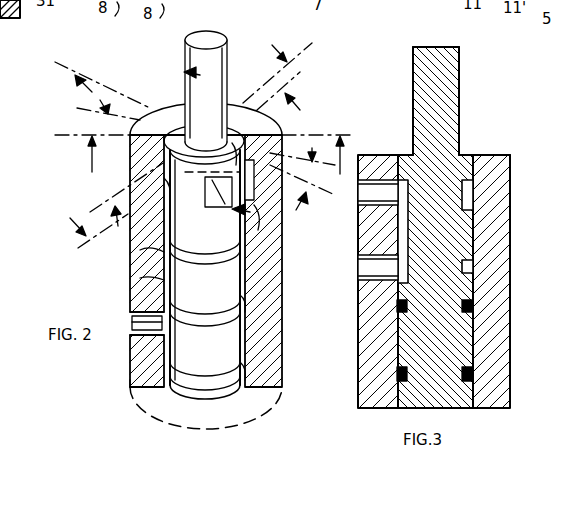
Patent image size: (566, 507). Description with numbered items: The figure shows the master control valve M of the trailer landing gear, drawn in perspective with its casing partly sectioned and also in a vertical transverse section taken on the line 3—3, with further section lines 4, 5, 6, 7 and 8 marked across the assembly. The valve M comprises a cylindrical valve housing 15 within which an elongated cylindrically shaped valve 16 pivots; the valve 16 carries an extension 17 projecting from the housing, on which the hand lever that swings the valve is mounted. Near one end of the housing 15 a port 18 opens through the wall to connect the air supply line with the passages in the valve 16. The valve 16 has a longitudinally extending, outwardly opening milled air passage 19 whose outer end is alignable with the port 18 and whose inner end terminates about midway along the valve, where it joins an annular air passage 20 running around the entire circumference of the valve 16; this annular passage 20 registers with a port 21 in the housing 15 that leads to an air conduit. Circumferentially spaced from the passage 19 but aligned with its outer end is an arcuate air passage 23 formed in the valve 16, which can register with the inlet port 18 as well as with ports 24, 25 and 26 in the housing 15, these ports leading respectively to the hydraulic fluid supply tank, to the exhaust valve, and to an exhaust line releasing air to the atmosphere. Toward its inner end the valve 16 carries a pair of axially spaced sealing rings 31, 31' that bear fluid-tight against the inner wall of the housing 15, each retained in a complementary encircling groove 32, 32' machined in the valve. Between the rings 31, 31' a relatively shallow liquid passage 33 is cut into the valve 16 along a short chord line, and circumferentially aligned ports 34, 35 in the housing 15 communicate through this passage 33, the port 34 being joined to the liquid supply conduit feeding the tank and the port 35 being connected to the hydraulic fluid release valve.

In FIG. 2, the valve housing 15 is at (172, 110).
In FIG. 3, the valve housing 15 is at (497, 226).
In FIG. 2, the valve 16 is at (227, 330).
In FIG. 3, the valve 16 is at (463, 156).
In FIG. 2, the extension 17 is at (215, 34).
In FIG. 3, the extension 17 is at (448, 83).
In FIG. 2, the port 18 is at (134, 248).
In FIG. 3, the port 18 is at (378, 192).
In FIG. 2, the milled air passage 19 is at (164, 180).
In FIG. 3, the milled air passage 19 is at (403, 222).
In FIG. 2, the annular air passage 20 is at (240, 248).
In FIG. 3, the annular air passage 20 is at (468, 268).
In FIG. 2, the port 21 is at (140, 279).
In FIG. 3, the port 21 is at (374, 268).
In FIG. 2, the arcuate air passage 23 is at (243, 162).
In FIG. 3, the arcuate air passage 23 is at (468, 192).
In FIG. 2, the port 24 is at (222, 222).
In FIG. 2, the port 25 is at (278, 212).
In FIG. 2, the port 26 is at (238, 138).
In FIG. 2, the sealing ring 31 is at (239, 313).
In FIG. 3, the sealing ring 31 is at (505, 301).
In FIG. 2, the sealing ring 31' is at (186, 400).
In FIG. 3, the sealing ring 31' is at (505, 376).
In FIG. 2, the encircling groove 32 is at (293, 306).
In FIG. 3, the encircling groove 32 is at (364, 308).
In FIG. 2, the encircling groove 32' is at (293, 373).
In FIG. 3, the encircling groove 32' is at (362, 375).
In FIG. 2, the liquid passage 33 is at (132, 318).
In FIG. 2, the port 34 is at (133, 333).
In FIG. 2, the port 35 is at (140, 298).
In FIG. 2, the master control valve M is at (130, 384).
In FIG. 3, the master control valve M is at (503, 156).
In FIG. 2, the section line 3— 3 is at (197, 160).
In FIG. 2, the section line 4- 4 is at (222, 146).
In FIG. 2, the section line 5- 5 is at (195, 113).
In FIG. 2, the section line 6- 6 is at (185, 141).
In FIG. 2, the section line 7- 7 is at (197, 167).
In FIG. 2, the section line 8- 8 is at (205, 165).